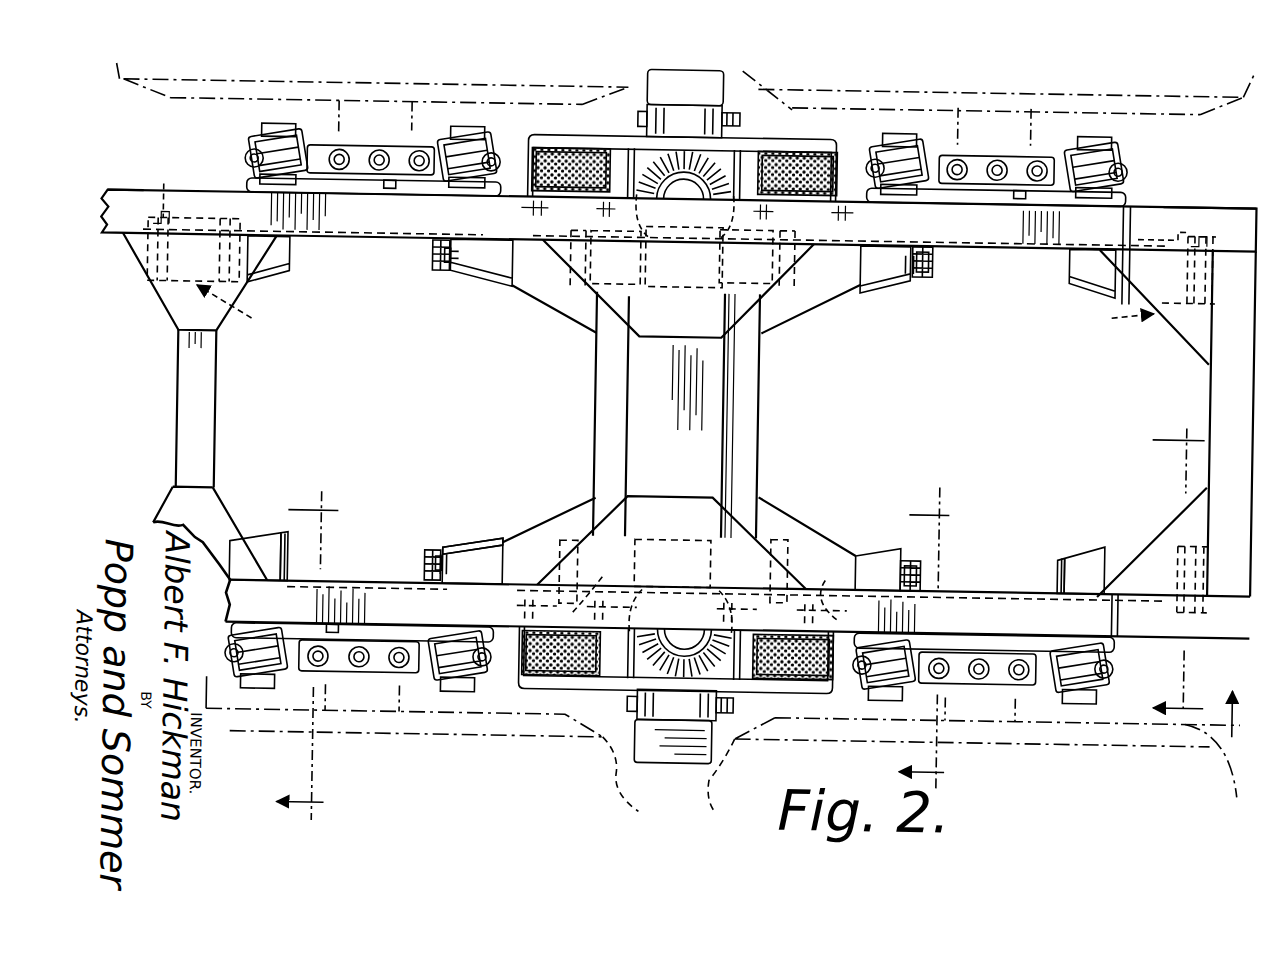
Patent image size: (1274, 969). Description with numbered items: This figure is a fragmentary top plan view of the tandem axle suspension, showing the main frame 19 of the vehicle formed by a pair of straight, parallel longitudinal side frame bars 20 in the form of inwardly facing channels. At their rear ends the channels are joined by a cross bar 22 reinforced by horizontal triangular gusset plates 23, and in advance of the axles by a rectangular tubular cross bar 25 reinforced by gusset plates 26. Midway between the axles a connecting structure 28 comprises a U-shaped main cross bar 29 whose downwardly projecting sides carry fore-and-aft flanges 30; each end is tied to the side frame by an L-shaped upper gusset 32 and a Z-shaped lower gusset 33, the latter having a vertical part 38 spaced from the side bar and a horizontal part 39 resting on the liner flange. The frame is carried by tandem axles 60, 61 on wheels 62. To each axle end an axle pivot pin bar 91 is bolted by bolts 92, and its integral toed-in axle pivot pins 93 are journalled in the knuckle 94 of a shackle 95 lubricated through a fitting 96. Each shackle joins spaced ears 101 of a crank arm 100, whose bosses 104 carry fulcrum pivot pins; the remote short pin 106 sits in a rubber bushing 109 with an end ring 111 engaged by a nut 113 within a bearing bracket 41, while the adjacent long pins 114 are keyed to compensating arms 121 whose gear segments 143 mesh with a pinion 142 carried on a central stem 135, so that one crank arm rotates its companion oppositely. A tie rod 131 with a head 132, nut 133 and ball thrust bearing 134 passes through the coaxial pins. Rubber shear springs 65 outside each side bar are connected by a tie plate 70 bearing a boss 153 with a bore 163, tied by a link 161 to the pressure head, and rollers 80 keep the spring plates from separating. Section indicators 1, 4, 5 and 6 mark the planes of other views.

The section line 1- 1 is at (722, 698).
The section line 4- 4 is at (313, 656).
The section line 5- 5 is at (934, 637).
The section line 6- 6 is at (1186, 564).
The main frame 19 is at (116, 196).
The side frame bars 20 is at (118, 243).
The cross bar 22 is at (1210, 362).
The gusset plates 23 is at (1180, 327).
The cross bar 25 is at (176, 386).
The gusset plates 26 is at (179, 333).
The connecting structure 28 is at (770, 406).
The main cross bar 29 is at (733, 430).
The flanges 30 is at (595, 389).
The upper gusset 32 is at (648, 338).
The lower gusset 33 is at (563, 317).
The vertical part 38 is at (875, 290).
The horizontal part 39 is at (884, 293).
The bearing bracket 41 is at (675, 317).
The front tandem axle 60 is at (405, 130).
The rear tandem axle 61 is at (1025, 140).
The wheels 62 is at (672, 451).
The rubber shear springs 65 is at (540, 170).
The tie plate 70 is at (620, 137).
The rollers 80 is at (705, 587).
The axle pivot pin bar 91 is at (392, 160).
The bolts 92 is at (985, 155).
The axle pivot pins 93 is at (318, 152).
The knuckle 94 is at (272, 150).
The shackle 95 is at (278, 130).
The lubricant fitting 96 is at (240, 166).
The crank arm 100 is at (388, 193).
The ears 101 is at (1232, 200).
The bosses 104 is at (268, 289).
The fulcrum pivot pin 106 is at (286, 562).
The rubber bushing 109 is at (1178, 224).
The end ring 111 is at (1205, 221).
The nut 113 is at (147, 291).
The fulcrum pivot pins 114 is at (453, 271).
The compensating arm 121 is at (585, 545).
The tie rod 131 is at (930, 255).
The head 132 is at (430, 250).
The nut 133 is at (920, 272).
The ball thrust bearing 134 is at (443, 274).
The central stem 135 is at (668, 287).
The pinion 142 is at (664, 198).
The gear segments 143 is at (680, 257).
The boss 153 is at (681, 412).
The link 161 is at (668, 776).
The bore 163 is at (738, 119).